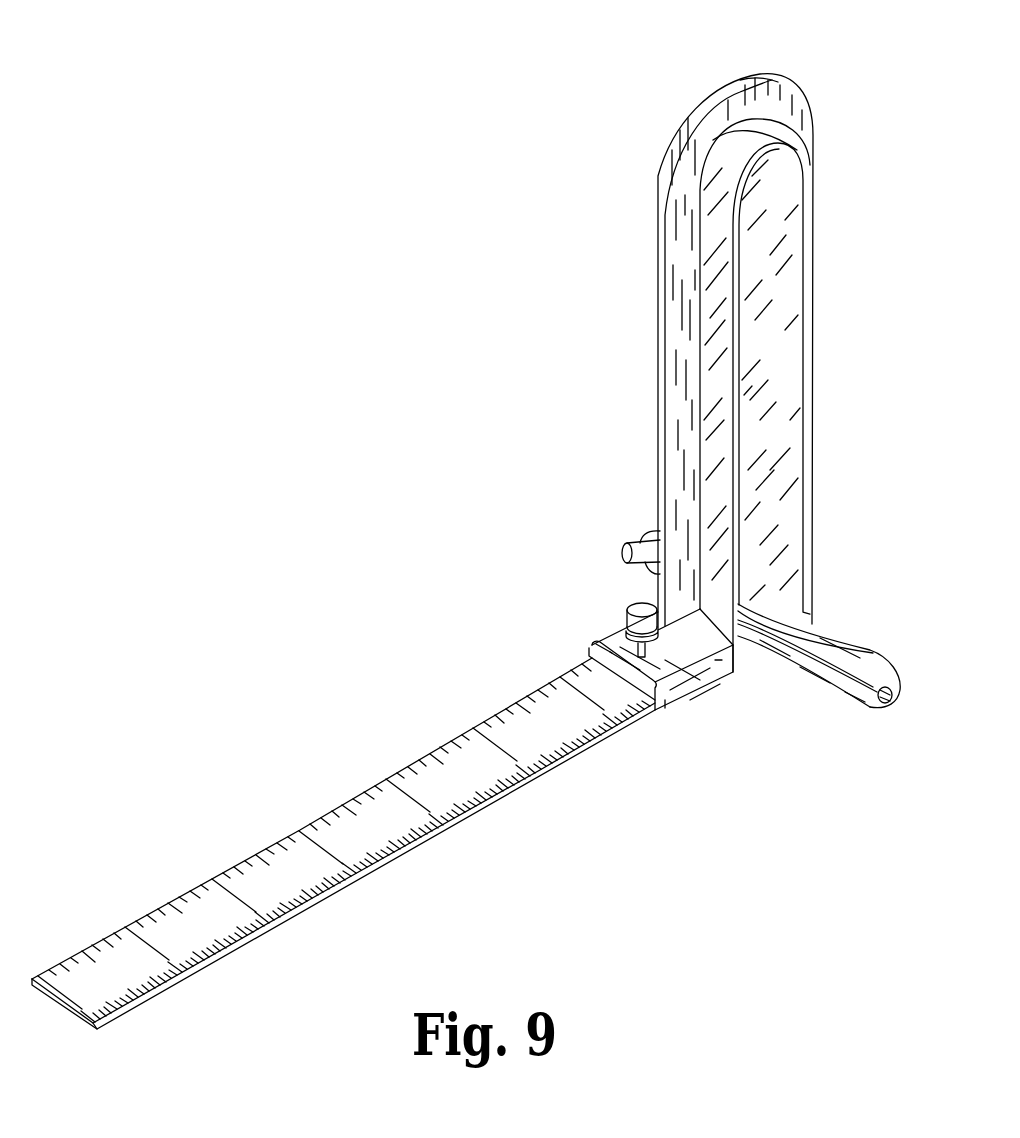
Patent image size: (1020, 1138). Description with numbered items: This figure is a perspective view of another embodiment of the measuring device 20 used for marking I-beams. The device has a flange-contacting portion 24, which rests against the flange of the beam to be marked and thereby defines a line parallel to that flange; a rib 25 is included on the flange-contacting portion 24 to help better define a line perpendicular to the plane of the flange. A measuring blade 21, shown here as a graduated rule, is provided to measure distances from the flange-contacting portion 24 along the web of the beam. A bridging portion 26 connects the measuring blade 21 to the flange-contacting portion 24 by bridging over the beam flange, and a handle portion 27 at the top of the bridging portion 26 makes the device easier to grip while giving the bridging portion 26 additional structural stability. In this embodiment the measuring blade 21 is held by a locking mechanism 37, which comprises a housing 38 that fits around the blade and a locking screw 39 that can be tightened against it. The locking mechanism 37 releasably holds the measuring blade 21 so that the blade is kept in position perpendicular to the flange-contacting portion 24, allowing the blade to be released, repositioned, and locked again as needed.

The measuring device 20 is at (583, 173).
The measuring blade 21 is at (373, 838).
The flange-contacting portion 24 is at (857, 653).
The rib 25 is at (625, 557).
The bridging portion 26 is at (812, 235).
The handle portion 27 is at (772, 88).
The locking mechanism 37 is at (701, 711).
The housing 38 is at (603, 642).
The locking screw 39 is at (643, 606).